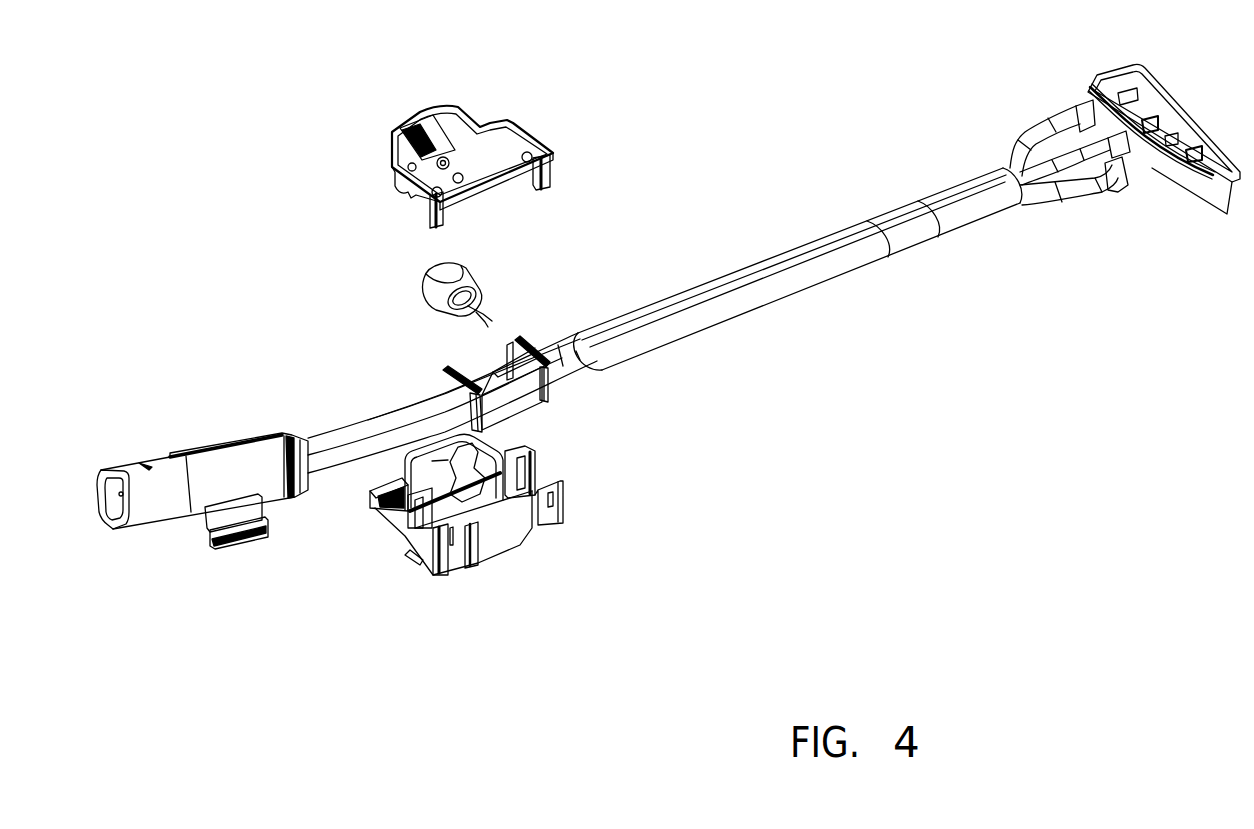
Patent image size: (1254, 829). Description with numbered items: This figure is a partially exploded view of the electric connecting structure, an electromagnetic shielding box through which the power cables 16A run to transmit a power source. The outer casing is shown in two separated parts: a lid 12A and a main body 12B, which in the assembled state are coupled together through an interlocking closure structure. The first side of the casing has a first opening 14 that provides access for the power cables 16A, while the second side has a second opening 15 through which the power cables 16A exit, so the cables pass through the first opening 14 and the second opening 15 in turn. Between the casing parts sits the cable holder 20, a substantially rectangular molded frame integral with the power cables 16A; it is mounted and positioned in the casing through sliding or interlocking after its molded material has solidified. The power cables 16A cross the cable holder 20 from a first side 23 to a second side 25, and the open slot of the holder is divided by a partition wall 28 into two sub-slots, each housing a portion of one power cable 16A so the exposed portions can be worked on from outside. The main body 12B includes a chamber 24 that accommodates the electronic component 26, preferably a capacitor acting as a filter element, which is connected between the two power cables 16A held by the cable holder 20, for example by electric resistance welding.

The lid 12A is at (492, 157).
The main body 12B is at (471, 535).
The first opening 14 is at (535, 470).
The second opening 15 is at (405, 537).
The power cable 16A is at (367, 428).
The cable holder 20 is at (491, 331).
The first side 23 is at (447, 388).
The chamber 24 is at (377, 518).
The second side 25 is at (545, 343).
The electronic component 26 is at (427, 289).
The partition wall 28 is at (507, 378).